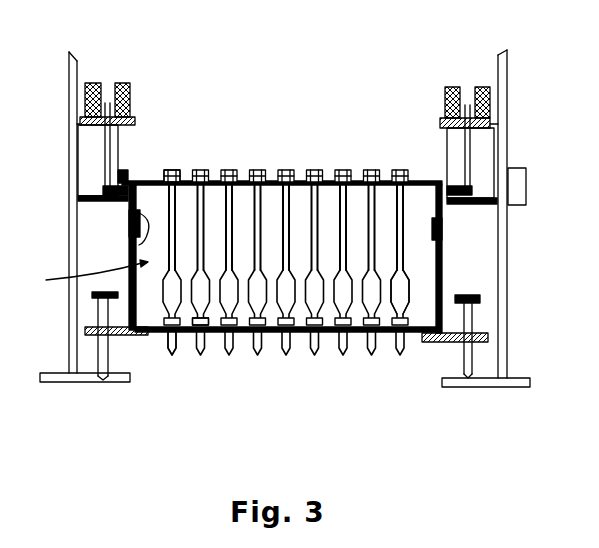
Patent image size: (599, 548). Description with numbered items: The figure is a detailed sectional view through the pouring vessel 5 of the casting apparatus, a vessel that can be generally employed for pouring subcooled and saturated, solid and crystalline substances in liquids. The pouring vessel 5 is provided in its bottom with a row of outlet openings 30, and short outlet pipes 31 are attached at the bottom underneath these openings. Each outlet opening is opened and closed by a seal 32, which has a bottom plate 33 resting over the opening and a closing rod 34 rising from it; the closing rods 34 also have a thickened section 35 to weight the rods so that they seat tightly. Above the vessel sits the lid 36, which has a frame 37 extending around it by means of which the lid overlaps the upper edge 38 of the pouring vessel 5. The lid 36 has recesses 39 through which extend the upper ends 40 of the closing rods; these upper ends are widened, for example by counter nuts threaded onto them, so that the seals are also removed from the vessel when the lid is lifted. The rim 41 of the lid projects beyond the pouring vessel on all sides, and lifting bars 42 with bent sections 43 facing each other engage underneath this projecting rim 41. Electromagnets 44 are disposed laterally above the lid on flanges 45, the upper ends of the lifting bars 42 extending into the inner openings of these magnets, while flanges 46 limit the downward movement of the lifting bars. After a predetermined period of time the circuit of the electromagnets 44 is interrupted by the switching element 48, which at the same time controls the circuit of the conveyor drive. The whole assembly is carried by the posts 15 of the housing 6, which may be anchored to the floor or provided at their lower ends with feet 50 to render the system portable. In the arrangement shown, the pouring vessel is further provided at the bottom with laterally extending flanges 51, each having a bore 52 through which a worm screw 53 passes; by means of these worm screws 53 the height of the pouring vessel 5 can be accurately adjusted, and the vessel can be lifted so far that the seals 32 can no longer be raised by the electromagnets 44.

The post 15 is at (76, 76).
The electromagnet 44 is at (123, 86).
The flange 45 is at (137, 122).
The lifting bar 42 is at (105, 133).
The rim 41 is at (116, 172).
The flange 46 is at (88, 193).
The bent section 43 is at (116, 197).
The lid 36 is at (155, 181).
The frame 37 is at (130, 210).
The upper edge 38 is at (136, 240).
The pouring vessel 5 is at (90, 277).
The worm screw 53 is at (100, 298).
The housing 6 is at (69, 328).
The bore 52 is at (98, 345).
The foot 50 is at (95, 383).
The flange 51 is at (138, 336).
The upper end 40 is at (172, 170).
The recess 39 is at (181, 188).
The seal 32 is at (325, 206).
The outlet opening 30 is at (176, 344).
The outlet pipe 31 is at (204, 340).
The closing rod 34 is at (400, 250).
The thickened section 35 is at (400, 285).
The bottom plate 33 is at (403, 320).
The switching element 48 is at (518, 182).